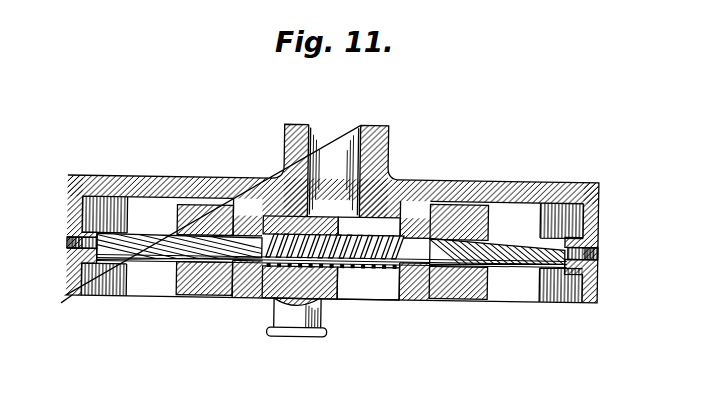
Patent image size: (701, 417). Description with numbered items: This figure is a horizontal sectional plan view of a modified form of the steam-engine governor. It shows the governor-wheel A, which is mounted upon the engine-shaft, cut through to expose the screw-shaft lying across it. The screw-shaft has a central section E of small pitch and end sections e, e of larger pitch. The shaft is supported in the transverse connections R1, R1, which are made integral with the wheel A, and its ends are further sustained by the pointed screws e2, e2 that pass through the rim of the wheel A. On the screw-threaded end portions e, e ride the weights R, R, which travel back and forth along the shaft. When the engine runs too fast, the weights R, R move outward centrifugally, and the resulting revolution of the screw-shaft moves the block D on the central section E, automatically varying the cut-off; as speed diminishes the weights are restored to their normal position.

The governor-wheel A is at (330, 216).
The weights R is at (462, 313).
The transverse connections R1 is at (423, 328).
The central section of the screw-shaft E is at (333, 261).
The end sections of the screw-shaft e is at (520, 288).
The pointed screws e2 is at (610, 250).
The block D is at (330, 302).